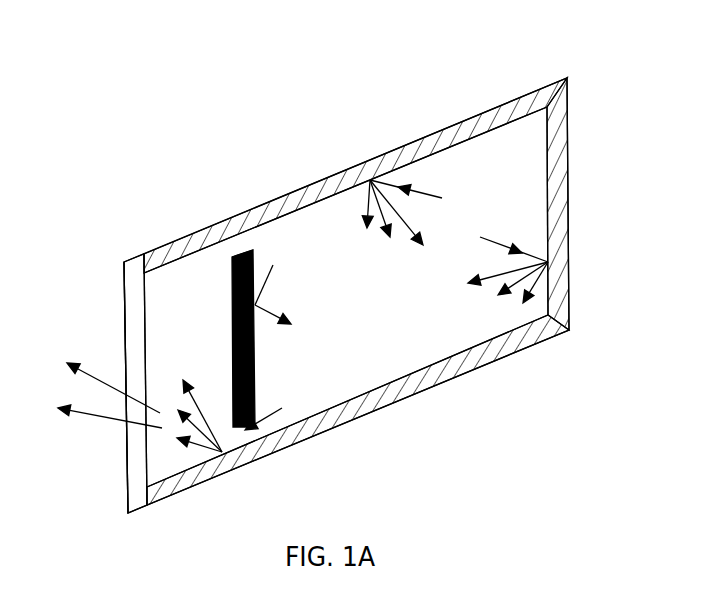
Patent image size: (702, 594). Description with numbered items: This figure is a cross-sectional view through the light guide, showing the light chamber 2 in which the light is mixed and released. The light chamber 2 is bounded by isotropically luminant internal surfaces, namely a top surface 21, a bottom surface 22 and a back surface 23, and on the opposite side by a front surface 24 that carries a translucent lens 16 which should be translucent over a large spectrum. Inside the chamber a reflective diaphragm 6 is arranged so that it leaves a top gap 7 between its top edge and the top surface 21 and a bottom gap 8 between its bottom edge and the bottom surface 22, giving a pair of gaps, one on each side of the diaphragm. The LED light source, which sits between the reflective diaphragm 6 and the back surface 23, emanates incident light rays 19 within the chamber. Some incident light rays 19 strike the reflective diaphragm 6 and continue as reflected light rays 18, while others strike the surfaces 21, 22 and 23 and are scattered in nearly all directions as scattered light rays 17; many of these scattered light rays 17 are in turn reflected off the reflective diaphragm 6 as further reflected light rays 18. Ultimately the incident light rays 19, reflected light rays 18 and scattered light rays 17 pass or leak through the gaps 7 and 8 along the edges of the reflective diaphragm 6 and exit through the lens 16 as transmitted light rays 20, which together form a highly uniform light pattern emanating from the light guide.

The light chamber 2 is at (349, 295).
The reflective diaphragm 6 is at (232, 292).
The top gap 7 is at (234, 252).
The bottom gap 8 is at (223, 440).
The translucent lens 16 is at (125, 478).
The scattered light rays 17 is at (368, 200).
The reflected light rays 18 is at (267, 307).
The incident light rays 19 is at (421, 192).
The transmitted light rays 20 is at (98, 380).
The top surface 21 is at (466, 143).
The bottom surface 22 is at (413, 367).
The back surface 23 is at (553, 166).
The front surface 24 is at (148, 316).